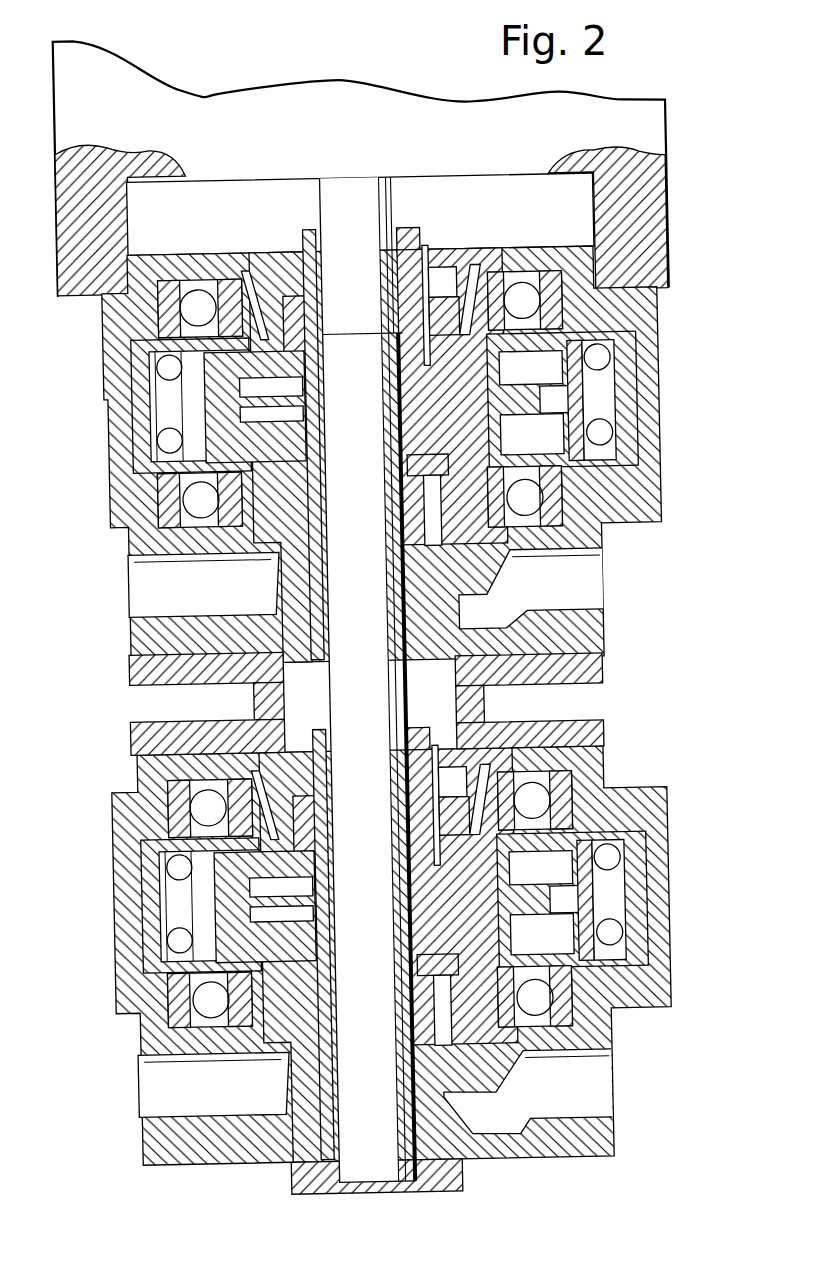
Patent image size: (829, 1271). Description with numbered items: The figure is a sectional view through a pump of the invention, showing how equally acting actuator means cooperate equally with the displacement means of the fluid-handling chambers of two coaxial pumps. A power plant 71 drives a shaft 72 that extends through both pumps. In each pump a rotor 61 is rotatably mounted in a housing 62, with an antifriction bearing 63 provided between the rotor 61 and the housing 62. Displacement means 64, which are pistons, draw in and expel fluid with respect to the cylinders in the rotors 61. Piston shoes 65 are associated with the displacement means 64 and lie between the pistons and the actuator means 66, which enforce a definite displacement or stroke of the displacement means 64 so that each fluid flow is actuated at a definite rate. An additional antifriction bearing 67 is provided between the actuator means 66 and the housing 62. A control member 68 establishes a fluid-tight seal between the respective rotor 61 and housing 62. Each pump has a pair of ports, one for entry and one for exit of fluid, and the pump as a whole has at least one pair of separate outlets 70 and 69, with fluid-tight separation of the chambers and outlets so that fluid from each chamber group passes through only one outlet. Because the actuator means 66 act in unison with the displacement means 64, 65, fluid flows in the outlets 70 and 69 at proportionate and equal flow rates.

The rotor 61 is at (418, 388).
The housing 62 is at (657, 512).
The antifriction bearing 63 is at (532, 303).
The displacement means 64 is at (302, 418).
The piston shoe 65 is at (186, 405).
The actuator means 66 is at (590, 386).
The antifriction bearing 67 is at (619, 438).
The control member 68 is at (423, 512).
The outlet 69 is at (600, 586).
The outlet 70 is at (155, 574).
The power plant 71 is at (164, 90).
The shaft 72 is at (356, 189).